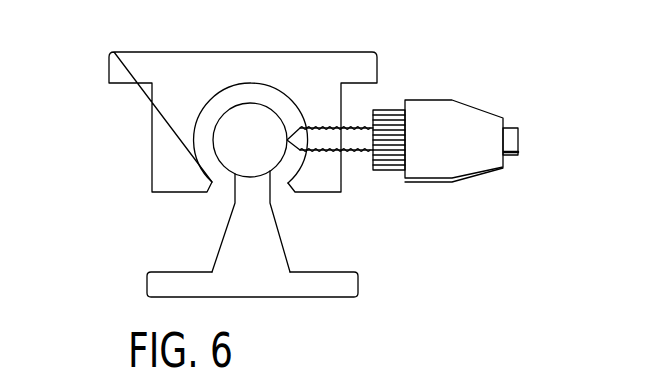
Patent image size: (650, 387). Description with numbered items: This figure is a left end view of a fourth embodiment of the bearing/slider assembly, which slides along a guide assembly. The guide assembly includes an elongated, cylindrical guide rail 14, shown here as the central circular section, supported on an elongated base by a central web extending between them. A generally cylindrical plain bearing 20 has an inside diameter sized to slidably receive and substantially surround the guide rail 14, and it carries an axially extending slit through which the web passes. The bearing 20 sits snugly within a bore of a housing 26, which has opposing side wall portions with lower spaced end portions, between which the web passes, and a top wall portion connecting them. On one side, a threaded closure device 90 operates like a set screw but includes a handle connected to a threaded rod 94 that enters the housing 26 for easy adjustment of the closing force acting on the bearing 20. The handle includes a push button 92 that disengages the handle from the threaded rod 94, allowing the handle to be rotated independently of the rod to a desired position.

The guide rail 14 is at (224, 168).
The plain bearing 20 is at (195, 160).
The housing 26 is at (150, 113).
The threaded closure device 90 is at (434, 90).
The push button 92 is at (518, 146).
The threaded rod 94 is at (352, 155).